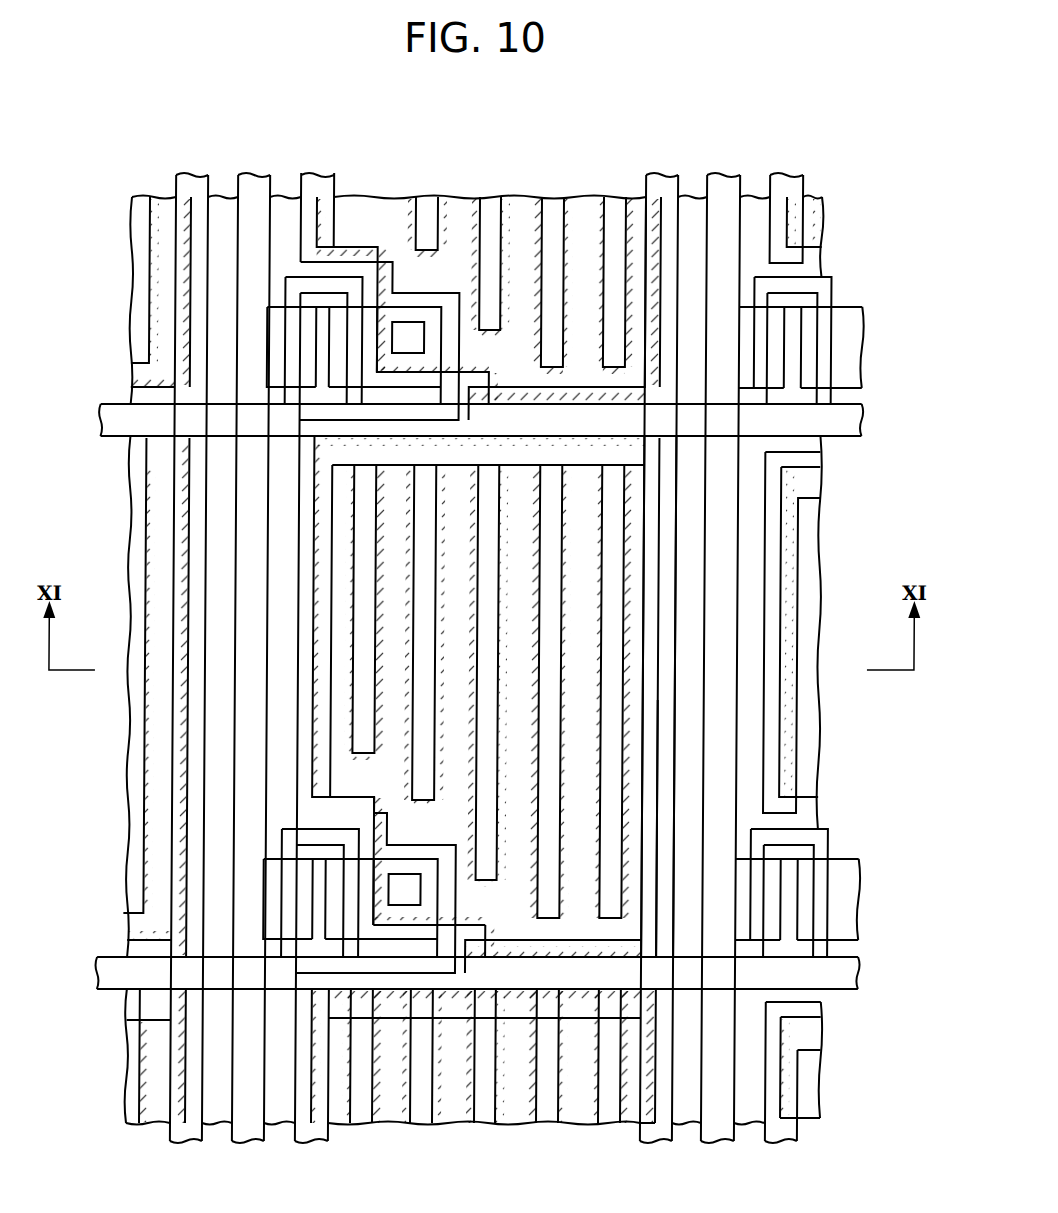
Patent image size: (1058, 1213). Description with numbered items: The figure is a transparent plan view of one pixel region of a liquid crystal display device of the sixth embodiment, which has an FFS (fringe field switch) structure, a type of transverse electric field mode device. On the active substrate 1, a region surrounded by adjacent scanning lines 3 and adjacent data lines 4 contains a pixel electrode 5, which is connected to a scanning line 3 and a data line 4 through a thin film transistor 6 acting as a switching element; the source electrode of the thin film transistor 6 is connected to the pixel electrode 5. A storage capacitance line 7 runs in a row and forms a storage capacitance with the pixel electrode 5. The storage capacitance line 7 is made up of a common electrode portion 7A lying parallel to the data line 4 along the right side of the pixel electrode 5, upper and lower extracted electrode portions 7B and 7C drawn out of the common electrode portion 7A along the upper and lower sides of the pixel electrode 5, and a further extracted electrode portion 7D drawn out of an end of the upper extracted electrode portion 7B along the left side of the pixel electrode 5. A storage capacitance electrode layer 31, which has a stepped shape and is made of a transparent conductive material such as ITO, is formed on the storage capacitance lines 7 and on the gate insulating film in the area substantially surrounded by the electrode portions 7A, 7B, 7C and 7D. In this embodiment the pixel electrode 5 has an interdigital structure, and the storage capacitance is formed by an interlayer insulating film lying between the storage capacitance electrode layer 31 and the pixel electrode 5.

The active substrate 1 is at (587, 193).
The scanning line 3 is at (102, 421).
The data line 4 is at (254, 181).
The pixel electrode 5 is at (657, 720).
The thin film transistor 6 is at (428, 858).
The storage capacitance line 7 is at (191, 181).
The common electrode portion 7A is at (672, 558).
The upper extracted electrode portion 7B is at (585, 452).
The lower extracted electrode portion 7C is at (527, 393).
The extracted electrode portion 7D is at (305, 518).
The storage capacitance electrode layer 31 is at (670, 758).